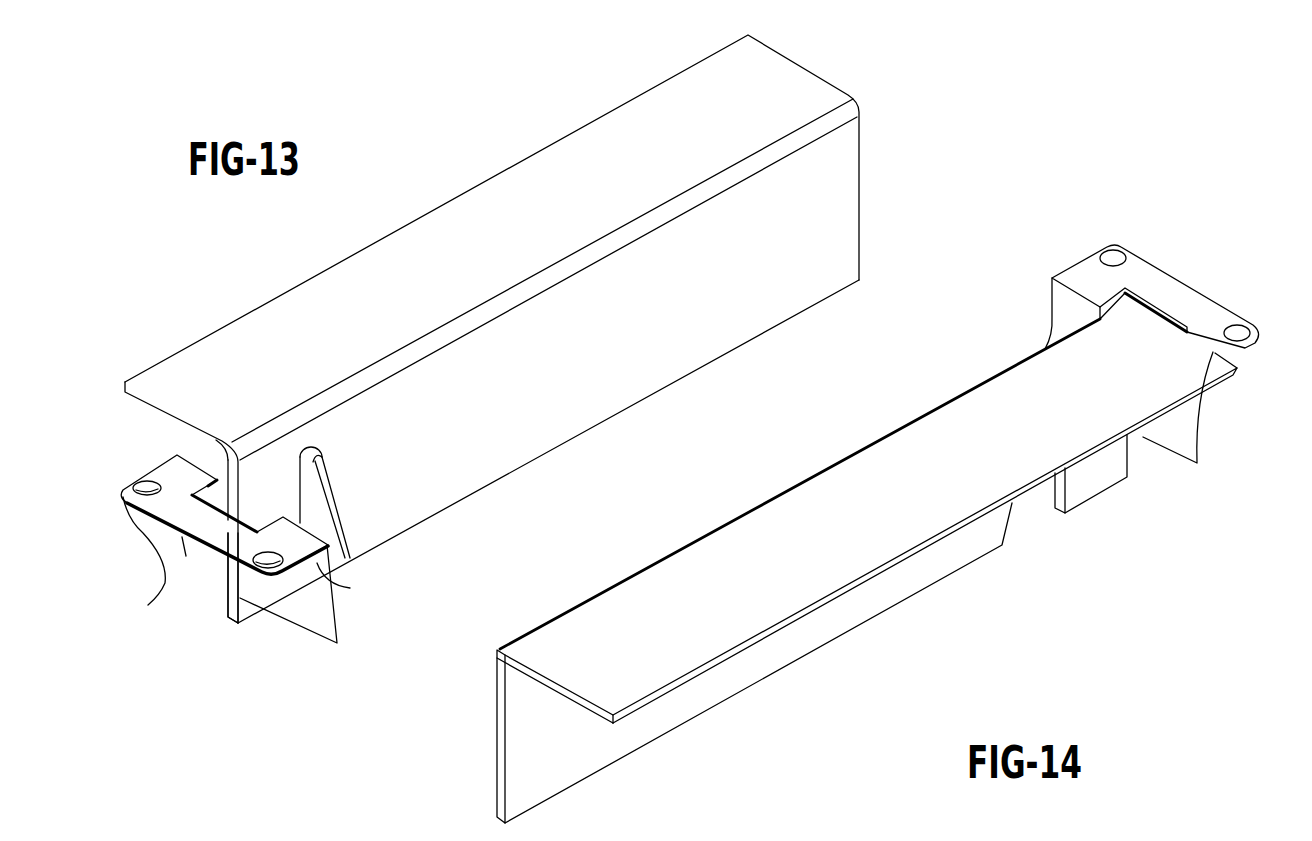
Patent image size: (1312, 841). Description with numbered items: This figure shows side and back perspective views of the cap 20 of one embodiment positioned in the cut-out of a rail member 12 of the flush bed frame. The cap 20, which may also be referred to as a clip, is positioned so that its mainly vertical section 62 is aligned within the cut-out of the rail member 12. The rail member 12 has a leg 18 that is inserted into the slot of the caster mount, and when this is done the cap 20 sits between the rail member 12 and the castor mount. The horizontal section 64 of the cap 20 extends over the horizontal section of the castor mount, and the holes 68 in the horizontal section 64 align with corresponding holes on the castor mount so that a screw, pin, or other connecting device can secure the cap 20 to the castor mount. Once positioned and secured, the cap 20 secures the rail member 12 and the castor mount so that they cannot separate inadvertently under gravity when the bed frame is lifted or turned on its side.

In FIG. 13, the rail member 12 is at (420, 200).
In FIG. 14, the rail member 12 is at (933, 600).
In FIG. 13, the leg 18 is at (248, 605).
In FIG. 14, the leg 18 is at (1103, 473).
In FIG. 13, the cap 20 is at (173, 640).
In FIG. 14, the cap 20 is at (1252, 370).
In FIG. 13, the mainly vertical section 62 is at (318, 562).
In FIG. 13, the horizontal section 64 is at (172, 467).
In FIG. 14, the horizontal section 64 is at (1090, 267).
In FIG. 13, the holes 68 is at (250, 553).
In FIG. 14, the holes 68 is at (1235, 327).